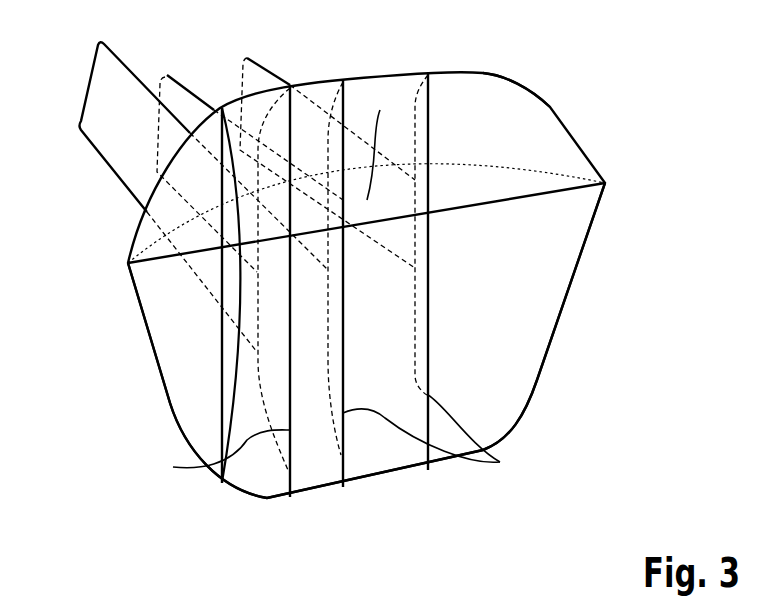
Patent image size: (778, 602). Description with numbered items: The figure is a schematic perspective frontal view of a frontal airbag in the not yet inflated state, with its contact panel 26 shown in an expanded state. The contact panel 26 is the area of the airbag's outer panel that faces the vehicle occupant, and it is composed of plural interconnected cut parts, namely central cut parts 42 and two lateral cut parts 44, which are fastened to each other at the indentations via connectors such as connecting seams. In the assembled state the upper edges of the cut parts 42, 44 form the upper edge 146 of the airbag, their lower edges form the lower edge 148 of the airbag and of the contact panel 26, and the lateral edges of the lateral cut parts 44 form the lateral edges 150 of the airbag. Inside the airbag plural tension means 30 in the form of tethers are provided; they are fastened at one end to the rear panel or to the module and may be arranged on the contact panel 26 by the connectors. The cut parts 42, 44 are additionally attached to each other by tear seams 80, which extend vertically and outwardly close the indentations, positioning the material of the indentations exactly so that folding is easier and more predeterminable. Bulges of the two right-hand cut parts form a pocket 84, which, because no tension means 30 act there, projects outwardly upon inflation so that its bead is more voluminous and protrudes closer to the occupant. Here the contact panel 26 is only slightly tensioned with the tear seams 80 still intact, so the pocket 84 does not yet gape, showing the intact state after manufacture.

The contact panel 26 is at (497, 278).
The tension means 30 is at (107, 145).
The central cut parts 42 is at (248, 485).
The lateral cut parts 44 is at (178, 405).
The tear seams 80 is at (504, 463).
The pocket 84 is at (230, 335).
The upper edge 146 is at (518, 80).
The lower edge 148 is at (450, 470).
The lateral edges 150 is at (587, 247).